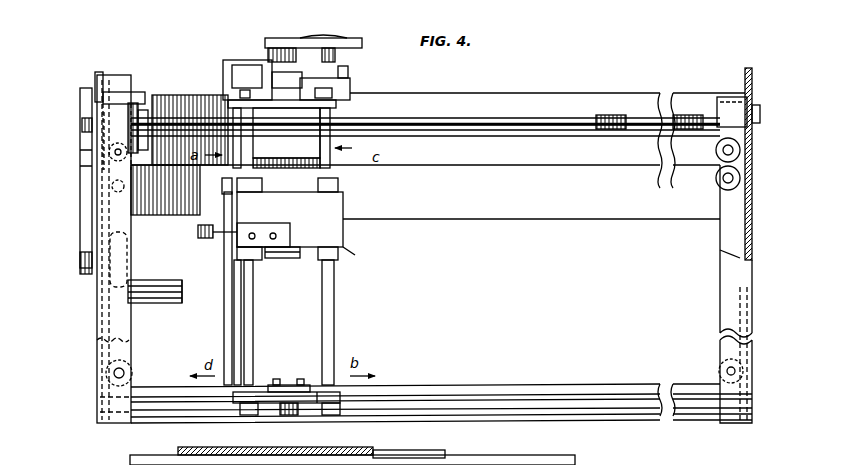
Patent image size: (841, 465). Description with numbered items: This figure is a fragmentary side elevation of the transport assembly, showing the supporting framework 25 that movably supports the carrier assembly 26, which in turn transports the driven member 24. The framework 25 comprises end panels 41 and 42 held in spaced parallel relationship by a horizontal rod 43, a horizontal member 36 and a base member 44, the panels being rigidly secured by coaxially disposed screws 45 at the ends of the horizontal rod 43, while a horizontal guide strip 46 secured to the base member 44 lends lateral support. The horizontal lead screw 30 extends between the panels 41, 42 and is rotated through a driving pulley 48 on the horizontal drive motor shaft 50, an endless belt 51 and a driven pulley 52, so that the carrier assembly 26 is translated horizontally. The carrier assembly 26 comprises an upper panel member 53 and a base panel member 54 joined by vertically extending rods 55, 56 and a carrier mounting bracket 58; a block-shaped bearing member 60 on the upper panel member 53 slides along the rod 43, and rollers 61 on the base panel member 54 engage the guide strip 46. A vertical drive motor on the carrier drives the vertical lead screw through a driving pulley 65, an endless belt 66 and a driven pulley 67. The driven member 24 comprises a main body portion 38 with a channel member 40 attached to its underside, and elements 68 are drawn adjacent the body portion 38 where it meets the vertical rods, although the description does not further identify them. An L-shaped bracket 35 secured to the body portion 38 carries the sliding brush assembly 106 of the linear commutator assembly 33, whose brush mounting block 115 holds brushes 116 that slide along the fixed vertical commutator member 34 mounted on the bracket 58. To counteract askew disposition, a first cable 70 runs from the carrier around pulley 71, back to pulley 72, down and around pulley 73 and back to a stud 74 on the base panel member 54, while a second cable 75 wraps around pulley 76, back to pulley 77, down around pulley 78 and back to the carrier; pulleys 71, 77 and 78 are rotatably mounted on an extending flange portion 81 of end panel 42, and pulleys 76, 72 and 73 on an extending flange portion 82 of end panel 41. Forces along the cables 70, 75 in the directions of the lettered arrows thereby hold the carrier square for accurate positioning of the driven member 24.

The driven member 24 is at (348, 208).
The supporting framework 25 is at (600, 306).
The carrier assembly 26 is at (345, 250).
The horizontal lead screw 30 is at (462, 117).
The linear commutator assembly 33 is at (216, 286).
The fixed vertical commutator member 34 is at (222, 328).
The L-shaped bracket 35 is at (198, 232).
The horizontal member 36 is at (627, 93).
The main body portion 38 is at (298, 214).
The channel member 40 is at (290, 258).
The end panel 41 is at (94, 298).
The end panel 42 is at (756, 302).
The horizontal rod 43 is at (712, 100).
The base member 44 is at (578, 415).
The screws 45 is at (84, 125).
The horizontal guide strip 46 is at (515, 410).
The driving pulley 48 is at (80, 262).
The horizontal drive motor shaft 50 is at (150, 254).
The endless belt 51 is at (84, 156).
The driven pulley 52 is at (84, 100).
The upper panel member 53 is at (346, 100).
The base panel member 54 is at (340, 403).
The vertically extending rod 55 is at (254, 320).
The vertically extending rod 56 is at (336, 340).
The carrier mounting bracket 58 is at (230, 105).
The bearing member 60 is at (294, 148).
The rollers 61 is at (290, 415).
The driving pulley 65 is at (272, 40).
The endless belt 66 is at (320, 42).
The driven pulley 67 is at (350, 46).
The bushing 68 is at (362, 178).
The first cable 70 is at (512, 137).
The pulley 71 is at (742, 150).
The pulley 72 is at (115, 205).
The pulley 73 is at (106, 390).
The stud 74 is at (278, 384).
The second cable 75 is at (184, 170).
The pulley 76 is at (100, 170).
The pulley 77 is at (742, 178).
The pulley 78 is at (752, 370).
The extending flange portion 81 is at (720, 250).
The extending flange portion 82 is at (100, 212).
The sliding brush assembly 106 is at (182, 280).
The brush mounting block 115 is at (222, 228).
The brushes 116 is at (222, 252).